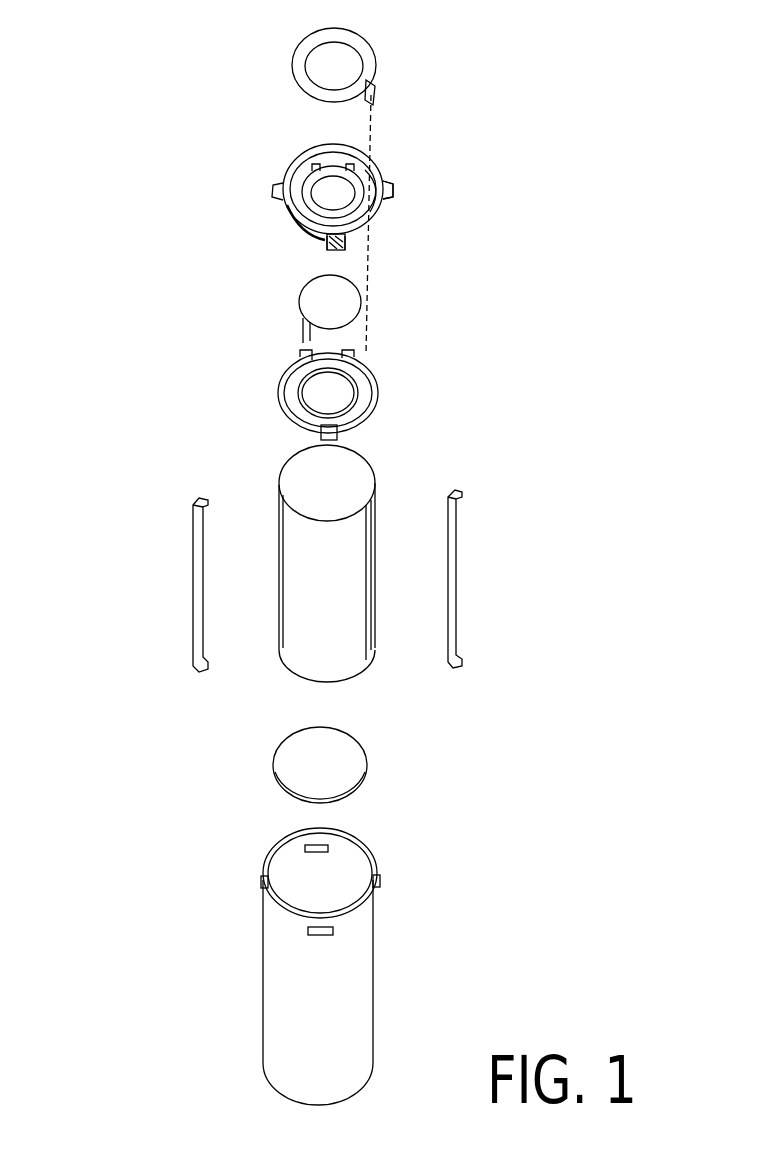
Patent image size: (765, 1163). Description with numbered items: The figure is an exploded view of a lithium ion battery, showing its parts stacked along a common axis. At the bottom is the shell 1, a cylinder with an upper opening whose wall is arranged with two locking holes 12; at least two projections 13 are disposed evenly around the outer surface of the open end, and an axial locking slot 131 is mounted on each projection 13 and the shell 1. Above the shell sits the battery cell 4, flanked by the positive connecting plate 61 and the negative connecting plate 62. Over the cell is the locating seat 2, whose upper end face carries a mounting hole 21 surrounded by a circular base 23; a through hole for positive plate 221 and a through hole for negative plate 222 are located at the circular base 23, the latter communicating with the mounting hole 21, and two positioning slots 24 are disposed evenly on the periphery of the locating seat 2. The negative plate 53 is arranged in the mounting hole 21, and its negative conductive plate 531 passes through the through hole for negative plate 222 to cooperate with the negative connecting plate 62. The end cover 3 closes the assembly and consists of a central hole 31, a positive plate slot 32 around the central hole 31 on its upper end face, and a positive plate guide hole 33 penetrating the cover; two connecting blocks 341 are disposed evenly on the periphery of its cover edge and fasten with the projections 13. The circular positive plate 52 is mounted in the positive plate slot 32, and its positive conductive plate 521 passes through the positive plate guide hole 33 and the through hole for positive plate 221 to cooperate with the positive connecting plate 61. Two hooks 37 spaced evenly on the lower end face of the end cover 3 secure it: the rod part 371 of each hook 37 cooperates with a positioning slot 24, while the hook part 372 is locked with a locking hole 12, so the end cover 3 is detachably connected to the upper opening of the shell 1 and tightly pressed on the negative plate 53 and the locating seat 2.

The shell 1 is at (325, 942).
The locking hole 12 is at (333, 931).
The projection 13 is at (380, 875).
The axial locking slot 131 is at (378, 868).
The locating seat 2 is at (314, 411).
The mounting hole 21 is at (300, 376).
The circular base 23 is at (375, 378).
The positioning slot 24 is at (350, 438).
The through hole for positive plate 221 is at (375, 412).
The through hole for negative plate 222 is at (287, 410).
The end cover 3 is at (360, 191).
The central hole 31 is at (345, 187).
The positive plate slot 32 is at (297, 176).
The positive plate guide hole 33 is at (380, 212).
The connecting block 341 is at (392, 185).
The hook 37 is at (327, 243).
The rod part 371 is at (346, 242).
The hook part 372 is at (345, 251).
The battery cell 4 is at (280, 473).
The positive plate 52 is at (290, 62).
The positive conductive plate 521 is at (372, 92).
The negative plate 53 is at (365, 301).
The negative conductive plate 531 is at (303, 323).
The positive connecting plate 61 is at (456, 610).
The negative connecting plate 62 is at (193, 583).